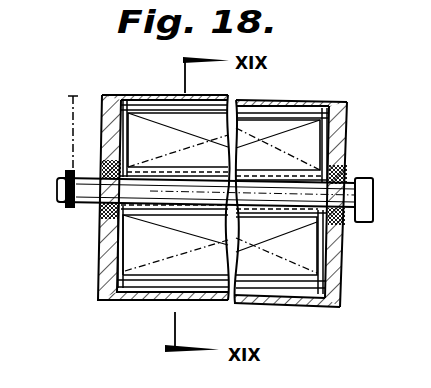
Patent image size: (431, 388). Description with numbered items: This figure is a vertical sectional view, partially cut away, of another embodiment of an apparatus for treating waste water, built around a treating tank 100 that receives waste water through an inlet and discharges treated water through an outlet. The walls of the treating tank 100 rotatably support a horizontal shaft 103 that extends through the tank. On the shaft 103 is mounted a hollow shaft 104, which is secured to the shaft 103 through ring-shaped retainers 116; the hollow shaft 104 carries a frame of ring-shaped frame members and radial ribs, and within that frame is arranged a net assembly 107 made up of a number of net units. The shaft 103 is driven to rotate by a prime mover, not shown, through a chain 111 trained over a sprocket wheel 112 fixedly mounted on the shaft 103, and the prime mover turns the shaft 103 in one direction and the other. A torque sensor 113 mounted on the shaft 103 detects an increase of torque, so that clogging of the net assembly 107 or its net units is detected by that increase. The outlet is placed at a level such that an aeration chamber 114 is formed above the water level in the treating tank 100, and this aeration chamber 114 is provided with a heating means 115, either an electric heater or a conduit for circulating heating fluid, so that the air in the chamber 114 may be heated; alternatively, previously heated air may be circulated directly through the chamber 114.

The treating tank 100 is at (320, 100).
The horizontal shaft 103 is at (347, 192).
The hollow shaft 104 is at (101, 275).
The net assembly 107 is at (289, 138).
The chain 111 is at (72, 124).
The sprocket wheel 112 is at (68, 206).
The torque sensor 113 is at (370, 204).
The aeration chamber 114 is at (325, 137).
The heating means 115 is at (148, 100).
The ring-shaped retainers 116 is at (170, 217).